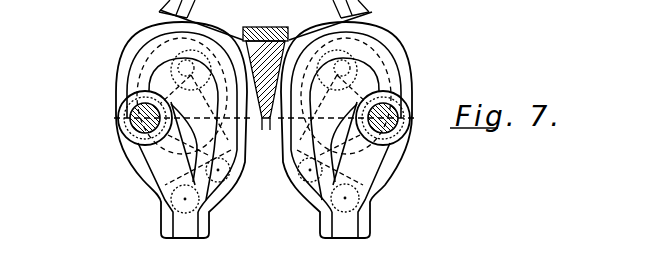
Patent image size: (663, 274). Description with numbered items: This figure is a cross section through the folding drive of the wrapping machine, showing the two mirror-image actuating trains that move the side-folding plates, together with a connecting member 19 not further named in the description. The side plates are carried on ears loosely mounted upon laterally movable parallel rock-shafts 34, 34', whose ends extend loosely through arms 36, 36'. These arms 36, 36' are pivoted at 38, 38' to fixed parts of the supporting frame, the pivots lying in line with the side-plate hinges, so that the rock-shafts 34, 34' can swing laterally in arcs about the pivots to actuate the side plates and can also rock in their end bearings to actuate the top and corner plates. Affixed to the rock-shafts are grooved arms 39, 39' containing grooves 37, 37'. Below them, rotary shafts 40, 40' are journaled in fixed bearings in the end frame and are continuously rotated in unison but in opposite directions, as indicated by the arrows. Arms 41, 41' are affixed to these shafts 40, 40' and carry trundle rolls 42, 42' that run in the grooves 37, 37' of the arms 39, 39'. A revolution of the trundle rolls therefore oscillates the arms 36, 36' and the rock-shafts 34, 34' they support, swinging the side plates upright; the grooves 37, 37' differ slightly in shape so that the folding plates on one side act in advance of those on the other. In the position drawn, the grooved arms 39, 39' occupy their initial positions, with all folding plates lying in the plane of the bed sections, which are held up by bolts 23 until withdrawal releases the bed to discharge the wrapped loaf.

The connecting rod 19 is at (265, 20).
The bolt 23 is at (267, 89).
The rock-shaft 34 is at (384, 119).
The rock-shaft 34' is at (144, 126).
The arm 36 is at (359, 119).
The arm 36' is at (165, 119).
The groove 37 is at (357, 130).
The groove 37' is at (167, 130).
The pivot 38 is at (336, 113).
The hub 38' is at (190, 113).
The grooved arm 39 is at (367, 122).
The grooved arm 39' is at (155, 122).
The rotary shaft 40 is at (448, 103).
The rotary shaft 40' is at (73, 136).
The arm 41 is at (370, 170).
The arm 41' is at (152, 170).
The trundle roll 42 is at (370, 211).
The roller pin 42' is at (207, 211).